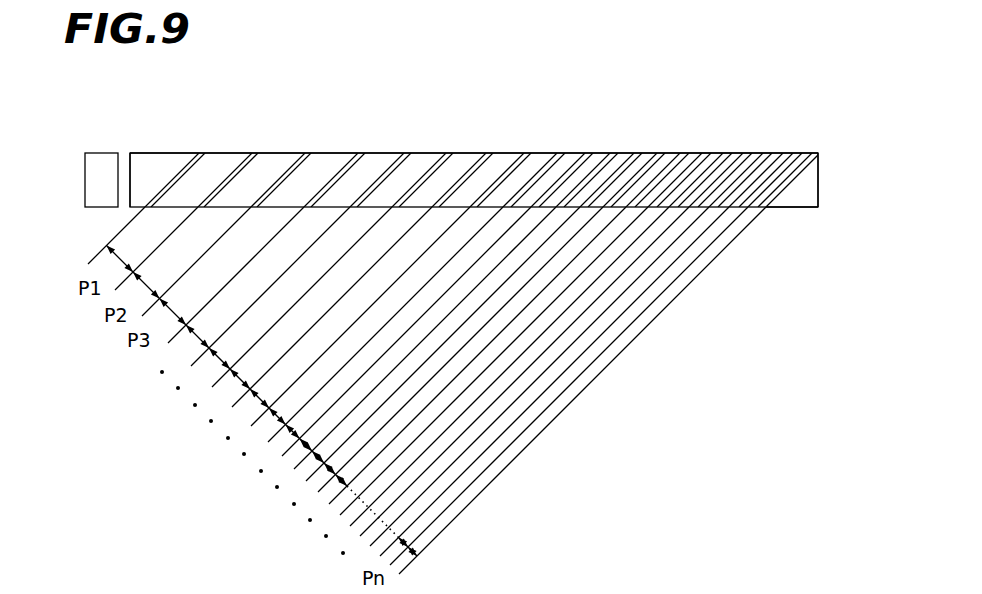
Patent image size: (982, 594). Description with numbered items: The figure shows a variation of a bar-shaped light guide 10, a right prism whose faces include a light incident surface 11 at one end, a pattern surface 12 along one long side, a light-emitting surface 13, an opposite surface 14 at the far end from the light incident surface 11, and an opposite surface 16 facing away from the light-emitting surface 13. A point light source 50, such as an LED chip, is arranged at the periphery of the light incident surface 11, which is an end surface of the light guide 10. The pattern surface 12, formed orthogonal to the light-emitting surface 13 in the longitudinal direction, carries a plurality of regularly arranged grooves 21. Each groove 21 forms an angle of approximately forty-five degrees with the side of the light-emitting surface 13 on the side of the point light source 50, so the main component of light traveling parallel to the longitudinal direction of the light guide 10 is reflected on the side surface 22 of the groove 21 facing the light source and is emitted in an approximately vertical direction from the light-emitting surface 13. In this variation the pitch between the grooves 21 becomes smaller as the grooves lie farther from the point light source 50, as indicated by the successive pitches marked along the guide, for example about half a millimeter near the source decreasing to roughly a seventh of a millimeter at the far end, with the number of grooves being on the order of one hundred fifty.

The bar-shaped light guide 10 is at (416, 163).
The light incident surface 11 is at (130, 167).
The pattern surface 12 is at (482, 155).
The light-emitting surface 13 is at (497, 153).
The opposite surface to the light incident surface 14 is at (818, 178).
The opposite surface to the light-emitting surface 16 is at (783, 197).
The groove 21 is at (393, 166).
The side surface of the groove 22 is at (365, 187).
The point light source 50 is at (85, 178).